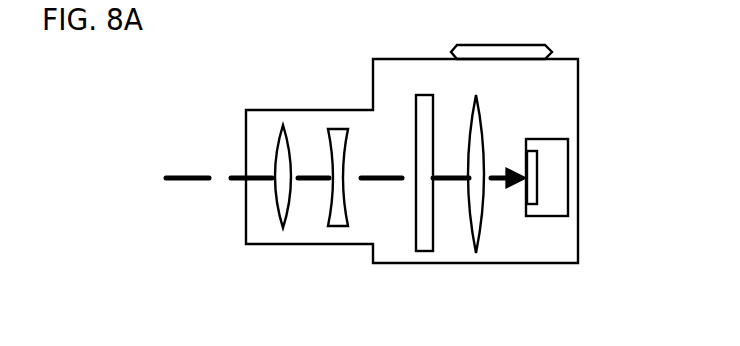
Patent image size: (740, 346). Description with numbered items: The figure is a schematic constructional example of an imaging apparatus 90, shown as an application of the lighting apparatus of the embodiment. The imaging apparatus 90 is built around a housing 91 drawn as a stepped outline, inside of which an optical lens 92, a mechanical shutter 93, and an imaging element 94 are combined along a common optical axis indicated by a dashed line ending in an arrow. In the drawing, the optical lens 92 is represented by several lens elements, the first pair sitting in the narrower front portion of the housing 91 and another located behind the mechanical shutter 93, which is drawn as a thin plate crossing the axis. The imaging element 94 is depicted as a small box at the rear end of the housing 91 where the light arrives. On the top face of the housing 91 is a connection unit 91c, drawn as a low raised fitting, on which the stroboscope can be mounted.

The imaging apparatus 90 is at (613, 298).
The housing 91 is at (458, 161).
The connection unit 91c is at (549, 34).
The optical lens 92 is at (352, 192).
The mechanical shutter 93 is at (392, 138).
The imaging element 94 is at (532, 227).